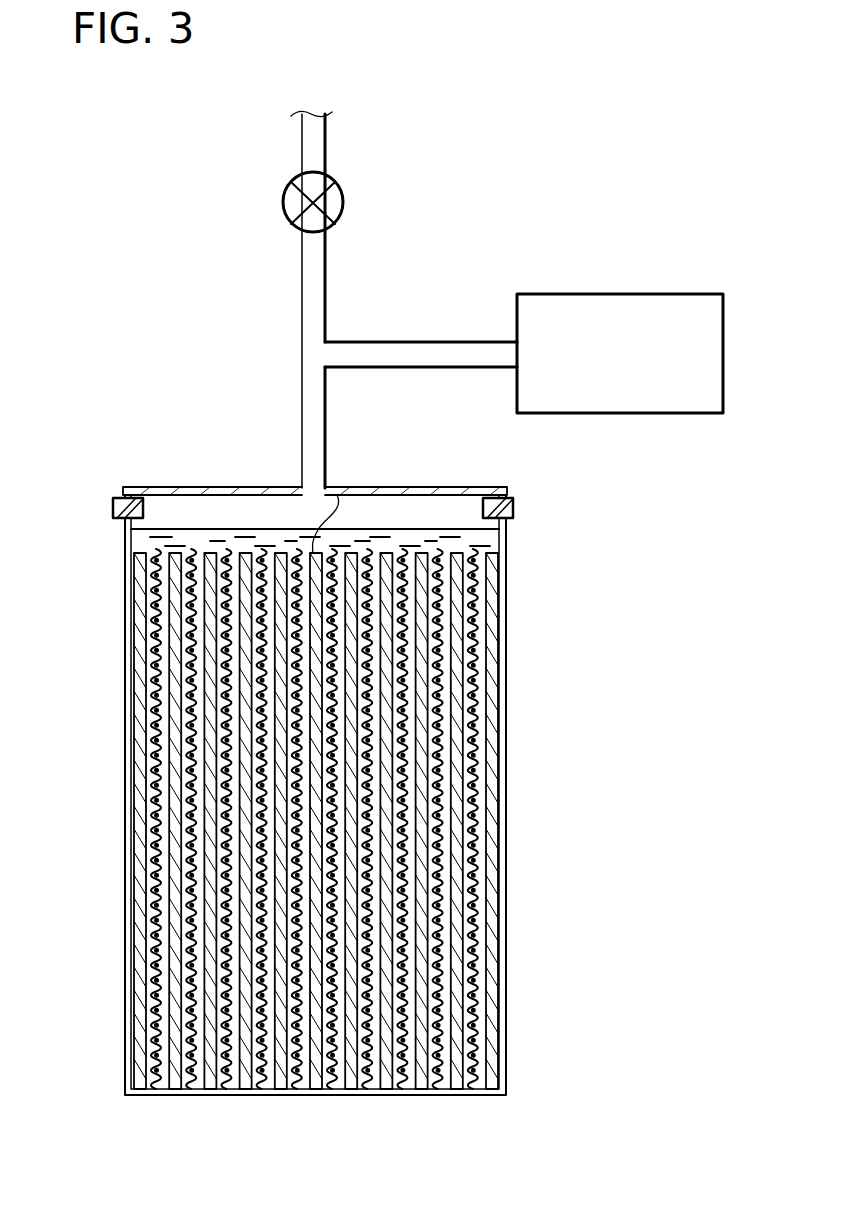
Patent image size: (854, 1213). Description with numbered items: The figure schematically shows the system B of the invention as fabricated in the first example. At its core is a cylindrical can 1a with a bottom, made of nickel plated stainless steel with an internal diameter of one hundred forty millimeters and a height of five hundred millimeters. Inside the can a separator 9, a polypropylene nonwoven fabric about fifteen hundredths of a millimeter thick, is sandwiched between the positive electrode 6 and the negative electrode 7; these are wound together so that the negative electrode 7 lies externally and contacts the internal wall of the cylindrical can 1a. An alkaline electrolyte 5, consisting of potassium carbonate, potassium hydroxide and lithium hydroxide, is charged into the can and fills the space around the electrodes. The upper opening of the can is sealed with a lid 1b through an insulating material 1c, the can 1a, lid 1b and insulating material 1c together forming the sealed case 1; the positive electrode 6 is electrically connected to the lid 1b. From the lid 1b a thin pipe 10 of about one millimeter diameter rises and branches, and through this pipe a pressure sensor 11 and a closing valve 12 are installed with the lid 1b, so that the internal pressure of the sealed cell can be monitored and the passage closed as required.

The system B is at (182, 404).
The cylindrical can assembly 1 is at (633, 423).
The cylindrical can 1a is at (505, 577).
The lid 1b is at (450, 486).
The insulating material 1c is at (113, 510).
The alkaline electrolyte 5 is at (138, 550).
The positive electrode 6 is at (318, 1077).
The negative electrode 7 is at (423, 1078).
The separator 9 is at (192, 1088).
The thin pipe 10 is at (327, 314).
The pressure sensor 11 is at (686, 292).
The closing valve 12 is at (344, 199).